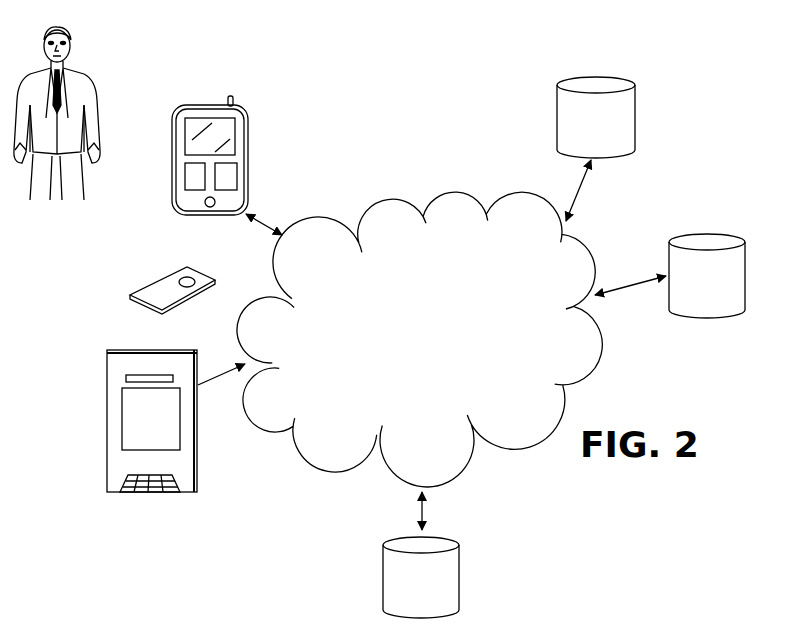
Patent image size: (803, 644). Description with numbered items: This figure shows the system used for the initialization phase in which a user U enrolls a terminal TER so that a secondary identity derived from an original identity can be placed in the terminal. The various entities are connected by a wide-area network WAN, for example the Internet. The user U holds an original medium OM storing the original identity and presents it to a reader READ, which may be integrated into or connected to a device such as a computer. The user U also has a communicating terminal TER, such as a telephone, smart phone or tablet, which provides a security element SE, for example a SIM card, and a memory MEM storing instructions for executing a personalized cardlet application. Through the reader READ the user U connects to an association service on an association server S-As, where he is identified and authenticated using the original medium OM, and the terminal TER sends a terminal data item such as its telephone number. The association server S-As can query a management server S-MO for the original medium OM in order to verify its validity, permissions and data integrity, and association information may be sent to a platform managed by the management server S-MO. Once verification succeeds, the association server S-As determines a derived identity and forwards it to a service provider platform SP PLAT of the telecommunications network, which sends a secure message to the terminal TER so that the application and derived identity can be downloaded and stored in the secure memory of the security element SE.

The user U is at (96, 70).
The terminal TER is at (217, 142).
The security element SE is at (193, 175).
The memory MEM is at (225, 175).
The original medium OM is at (140, 292).
The reader READ is at (111, 497).
The wide-area network WAN is at (446, 360).
The association server S-As is at (637, 101).
The management server S-MO is at (722, 245).
The service provider platform SP PLAT is at (461, 563).